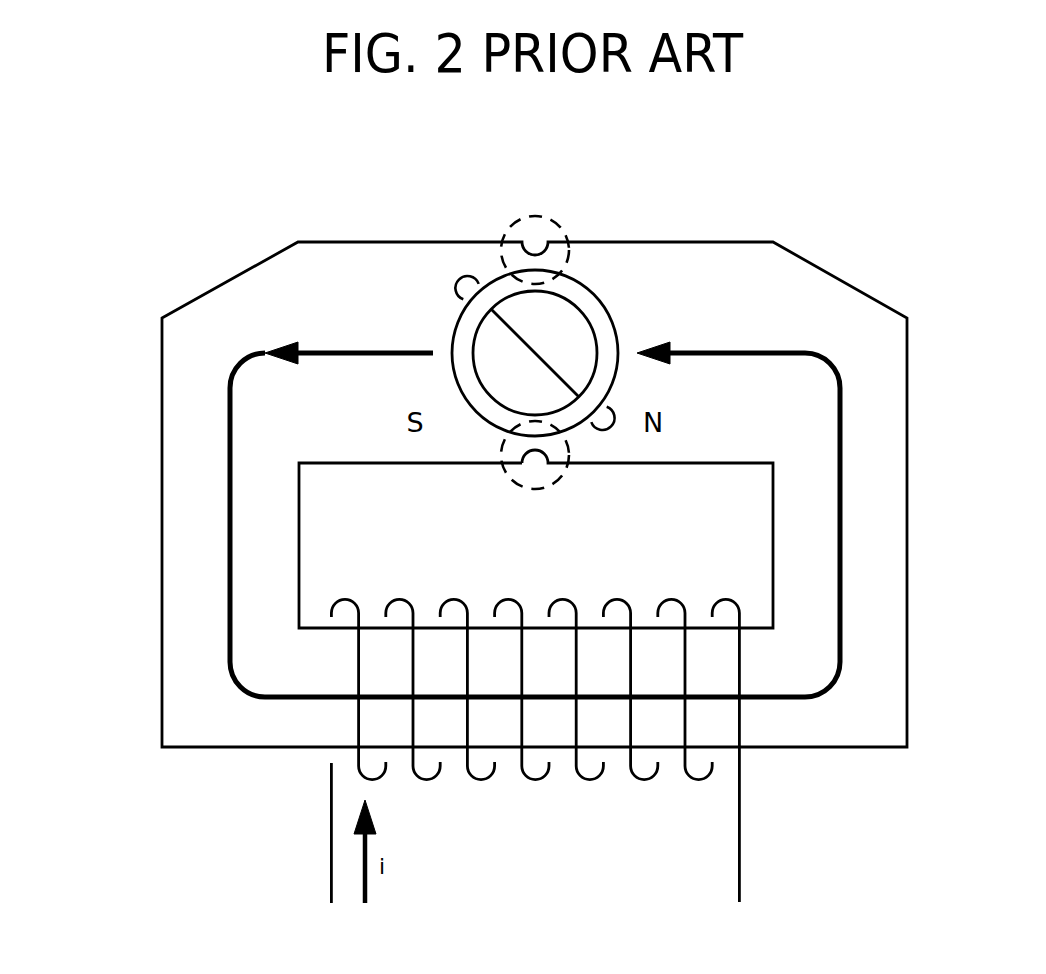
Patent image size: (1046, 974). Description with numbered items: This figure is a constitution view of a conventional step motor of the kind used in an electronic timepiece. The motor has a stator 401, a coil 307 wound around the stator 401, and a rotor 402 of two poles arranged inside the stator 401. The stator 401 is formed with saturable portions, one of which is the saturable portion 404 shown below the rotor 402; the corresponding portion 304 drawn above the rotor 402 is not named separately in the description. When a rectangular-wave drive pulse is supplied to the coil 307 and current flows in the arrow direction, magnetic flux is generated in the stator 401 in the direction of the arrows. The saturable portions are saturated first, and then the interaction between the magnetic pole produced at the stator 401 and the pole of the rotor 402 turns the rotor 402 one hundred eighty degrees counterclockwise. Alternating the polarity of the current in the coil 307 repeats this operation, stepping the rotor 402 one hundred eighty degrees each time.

The stator 401 is at (197, 490).
The rotor 402 is at (500, 353).
The first magnetic pole portion 304 is at (533, 212).
The saturable portion 404 is at (533, 492).
The coil 307 is at (523, 776).